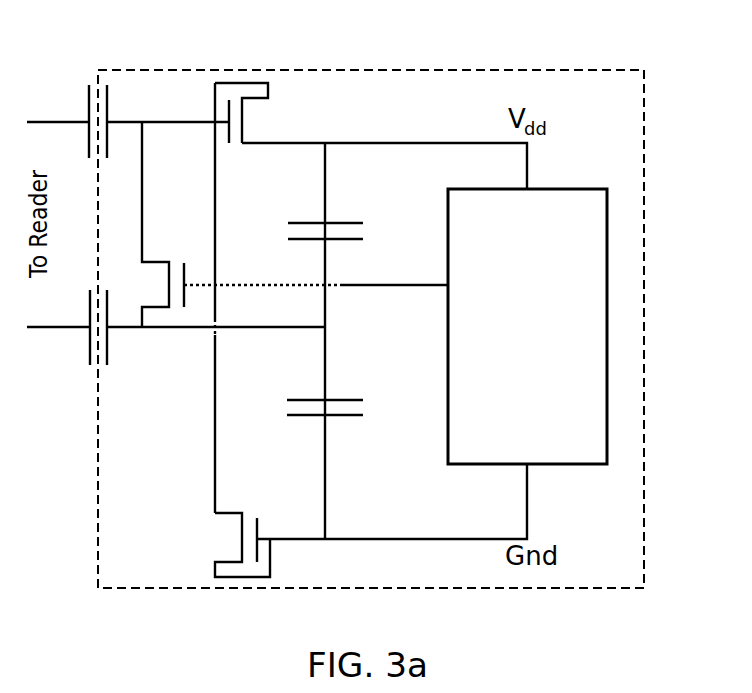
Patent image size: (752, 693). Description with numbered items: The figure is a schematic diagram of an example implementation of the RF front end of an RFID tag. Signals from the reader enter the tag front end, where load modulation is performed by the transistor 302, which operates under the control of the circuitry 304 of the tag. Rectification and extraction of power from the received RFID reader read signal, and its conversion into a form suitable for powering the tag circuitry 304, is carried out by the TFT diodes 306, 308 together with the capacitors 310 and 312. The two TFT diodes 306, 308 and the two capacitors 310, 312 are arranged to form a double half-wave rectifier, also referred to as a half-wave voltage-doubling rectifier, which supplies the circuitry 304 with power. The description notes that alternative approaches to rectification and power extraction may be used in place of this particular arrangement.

The transistor 302 is at (153, 308).
The circuitry 304 is at (606, 307).
The TFT diode 306 is at (243, 82).
The TFT diode 308 is at (243, 578).
The capacitor 310 is at (347, 222).
The capacitor 312 is at (347, 418).